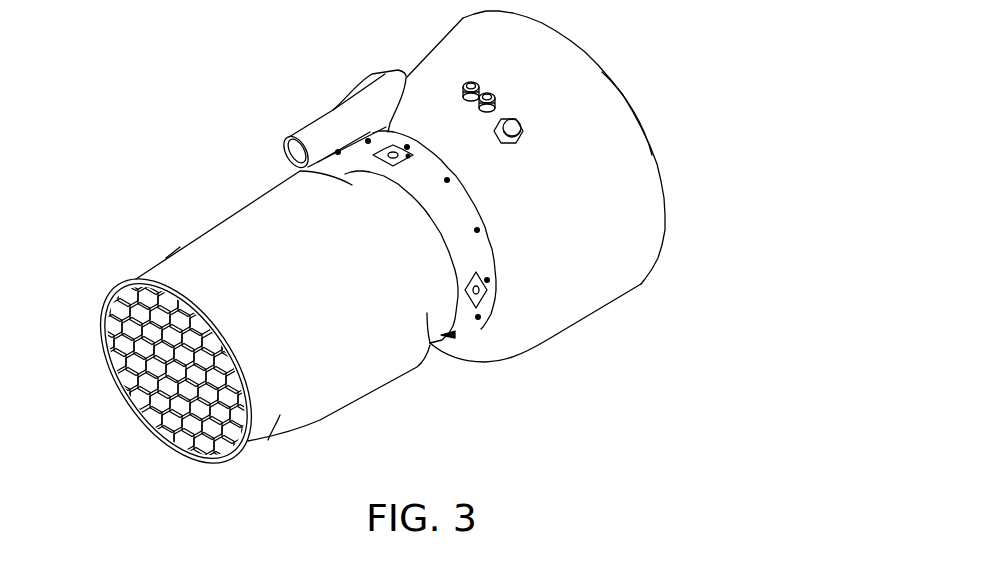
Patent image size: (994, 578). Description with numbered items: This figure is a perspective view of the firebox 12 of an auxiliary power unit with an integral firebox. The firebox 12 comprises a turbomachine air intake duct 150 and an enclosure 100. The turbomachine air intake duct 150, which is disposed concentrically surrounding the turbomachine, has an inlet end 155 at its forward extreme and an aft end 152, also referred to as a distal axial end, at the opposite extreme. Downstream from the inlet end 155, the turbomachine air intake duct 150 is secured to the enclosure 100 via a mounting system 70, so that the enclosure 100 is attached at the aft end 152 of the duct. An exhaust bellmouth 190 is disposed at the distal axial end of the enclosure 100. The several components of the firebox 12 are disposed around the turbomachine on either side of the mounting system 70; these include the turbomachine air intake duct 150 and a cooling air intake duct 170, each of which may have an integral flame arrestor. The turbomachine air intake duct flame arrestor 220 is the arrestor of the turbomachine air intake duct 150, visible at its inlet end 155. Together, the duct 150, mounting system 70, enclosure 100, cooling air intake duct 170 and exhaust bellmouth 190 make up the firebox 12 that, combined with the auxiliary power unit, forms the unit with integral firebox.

The firebox 12 is at (165, 177).
The mounting system 70 is at (462, 323).
The enclosure 100 is at (437, 41).
The turbomachine air intake duct 150 is at (331, 297).
The aft end 152 is at (428, 229).
The inlet end 155 is at (108, 386).
The cooling air intake duct 170 is at (307, 127).
The exhaust bellmouth 190 is at (635, 98).
The turbomachine air intake duct flame arrestor 220 is at (200, 428).